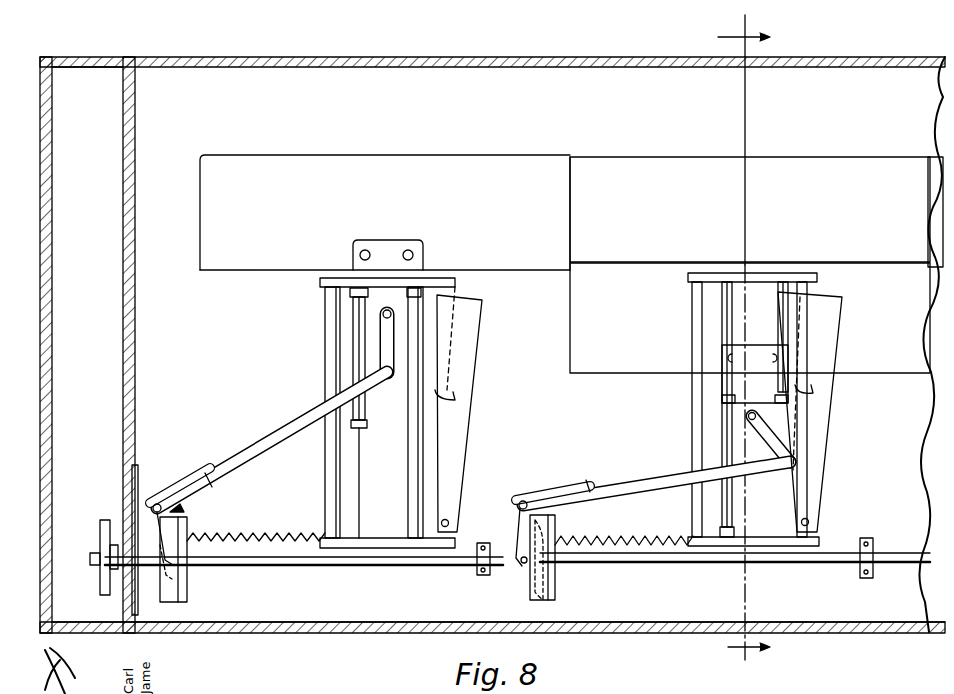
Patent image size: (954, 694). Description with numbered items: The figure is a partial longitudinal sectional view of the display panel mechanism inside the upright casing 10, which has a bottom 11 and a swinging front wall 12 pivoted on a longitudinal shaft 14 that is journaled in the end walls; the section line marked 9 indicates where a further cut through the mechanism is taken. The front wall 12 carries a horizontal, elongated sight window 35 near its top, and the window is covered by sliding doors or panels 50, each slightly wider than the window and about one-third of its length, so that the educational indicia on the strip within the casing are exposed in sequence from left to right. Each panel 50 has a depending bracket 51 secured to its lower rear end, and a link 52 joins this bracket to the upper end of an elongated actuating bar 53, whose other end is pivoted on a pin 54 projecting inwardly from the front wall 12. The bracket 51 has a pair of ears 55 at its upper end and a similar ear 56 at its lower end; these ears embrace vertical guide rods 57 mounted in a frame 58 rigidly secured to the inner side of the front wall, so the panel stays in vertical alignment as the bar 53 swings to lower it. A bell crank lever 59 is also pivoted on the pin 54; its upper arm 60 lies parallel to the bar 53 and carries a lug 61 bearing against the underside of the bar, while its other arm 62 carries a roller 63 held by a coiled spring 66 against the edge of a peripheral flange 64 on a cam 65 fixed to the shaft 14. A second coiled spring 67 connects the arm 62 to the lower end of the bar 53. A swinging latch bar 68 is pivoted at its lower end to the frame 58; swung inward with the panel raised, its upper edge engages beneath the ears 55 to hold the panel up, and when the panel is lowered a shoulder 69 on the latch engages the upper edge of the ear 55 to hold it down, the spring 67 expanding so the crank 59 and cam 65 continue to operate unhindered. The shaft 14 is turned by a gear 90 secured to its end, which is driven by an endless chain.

The section line 9- 9 is at (751, 337).
The upright casing 10 is at (134, 115).
The bottom 11 is at (376, 622).
The front wall 12 is at (387, 56).
The longitudinal shaft 14 is at (384, 560).
The sight opening or window 35 is at (695, 158).
The doors or panels 50 is at (537, 156).
The depending bracket 51 is at (392, 248).
The link 52 is at (380, 336).
The actuating bar 53 is at (296, 419).
The pin 54 is at (165, 500).
The ears 55 is at (424, 290).
The ear 56 is at (362, 426).
The vertical guide rods 57 is at (336, 462).
The frame 58 is at (328, 368).
The bell crank lever 59 is at (154, 510).
The upper arm 60 is at (202, 472).
The lug 61 is at (216, 490).
The arm 62 is at (517, 520).
The roller 63 is at (185, 578).
The peripheral flange 64 is at (546, 582).
The cam 65 is at (190, 590).
The coiled spring 66 is at (301, 530).
The coiled spring 67 is at (184, 506).
The swinging latch bar 68 is at (471, 345).
The shoulder 69 is at (452, 398).
The gear 90 is at (108, 580).